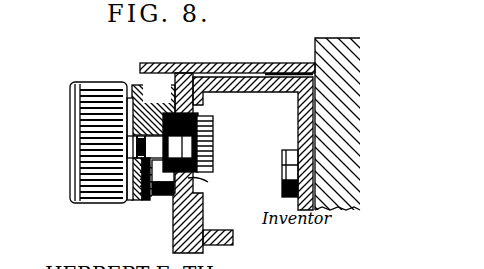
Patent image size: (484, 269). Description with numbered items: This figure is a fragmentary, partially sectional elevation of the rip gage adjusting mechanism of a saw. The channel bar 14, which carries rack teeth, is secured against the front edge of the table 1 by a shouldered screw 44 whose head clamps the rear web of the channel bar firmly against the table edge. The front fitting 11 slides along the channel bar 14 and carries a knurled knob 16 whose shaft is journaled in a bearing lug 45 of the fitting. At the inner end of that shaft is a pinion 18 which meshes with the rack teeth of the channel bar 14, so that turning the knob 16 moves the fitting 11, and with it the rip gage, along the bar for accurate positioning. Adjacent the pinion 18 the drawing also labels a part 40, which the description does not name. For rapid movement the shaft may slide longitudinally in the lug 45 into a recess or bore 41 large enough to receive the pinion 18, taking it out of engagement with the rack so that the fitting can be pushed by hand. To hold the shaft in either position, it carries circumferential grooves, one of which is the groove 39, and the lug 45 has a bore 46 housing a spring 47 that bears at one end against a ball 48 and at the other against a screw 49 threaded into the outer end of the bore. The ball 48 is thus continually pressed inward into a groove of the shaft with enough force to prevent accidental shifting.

The table 1 is at (338, 46).
The front fitting 11 is at (210, 64).
The channel bar 14 is at (252, 84).
The knurled knob 16 is at (94, 204).
The pinion 18 is at (208, 131).
The circumferential groove 39 is at (153, 142).
The threaded bushing 40 is at (213, 148).
The recess or bore 41 is at (215, 186).
The screw 44 is at (284, 191).
The bearing lug 45 is at (133, 100).
The bore 46 is at (172, 215).
The spring 47 is at (140, 202).
The ball 48 is at (94, 151).
The screw 49 is at (158, 200).